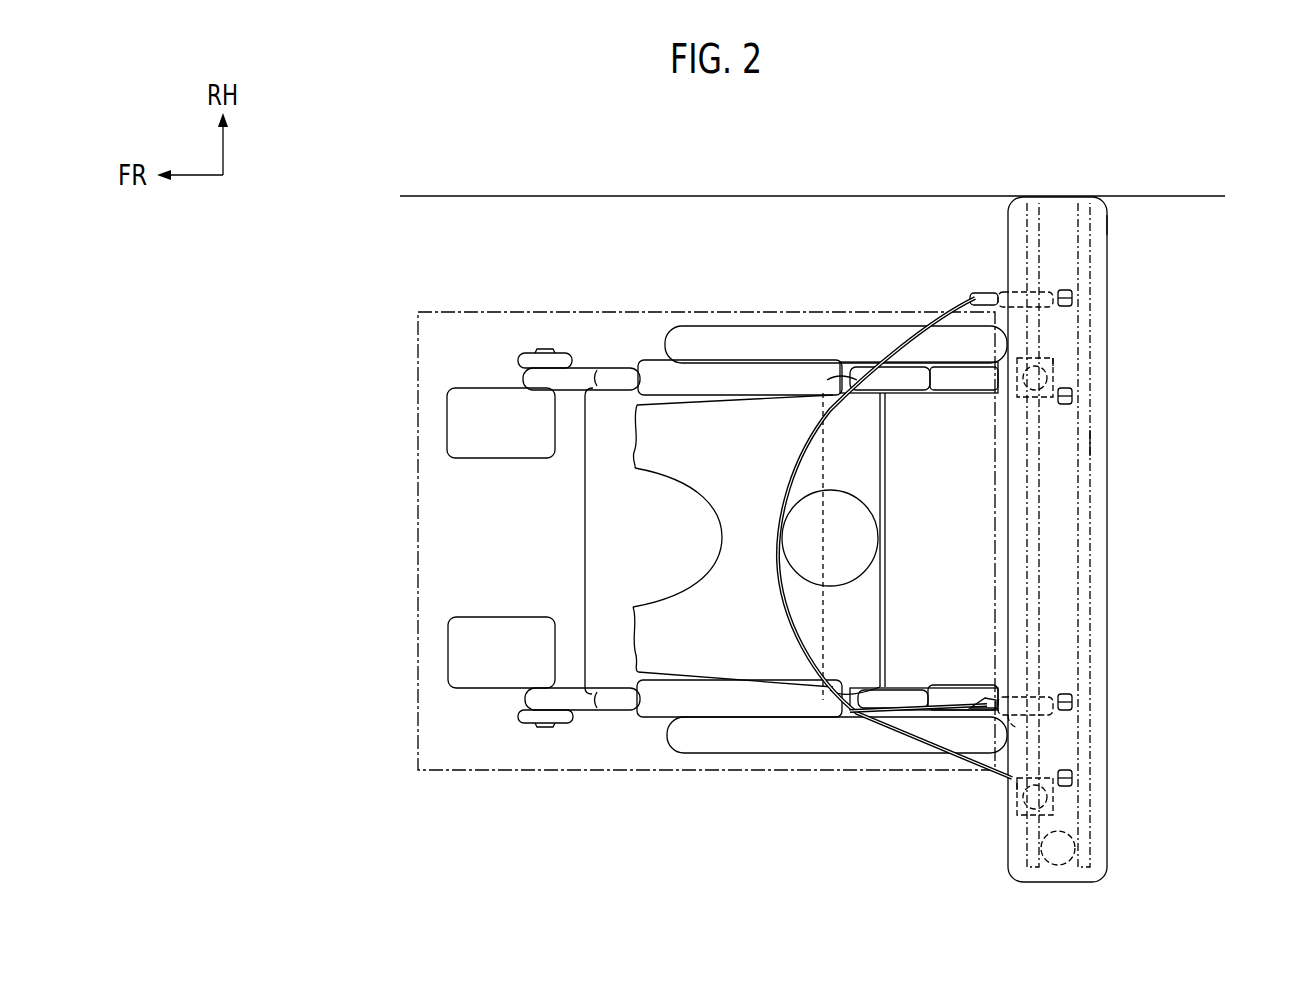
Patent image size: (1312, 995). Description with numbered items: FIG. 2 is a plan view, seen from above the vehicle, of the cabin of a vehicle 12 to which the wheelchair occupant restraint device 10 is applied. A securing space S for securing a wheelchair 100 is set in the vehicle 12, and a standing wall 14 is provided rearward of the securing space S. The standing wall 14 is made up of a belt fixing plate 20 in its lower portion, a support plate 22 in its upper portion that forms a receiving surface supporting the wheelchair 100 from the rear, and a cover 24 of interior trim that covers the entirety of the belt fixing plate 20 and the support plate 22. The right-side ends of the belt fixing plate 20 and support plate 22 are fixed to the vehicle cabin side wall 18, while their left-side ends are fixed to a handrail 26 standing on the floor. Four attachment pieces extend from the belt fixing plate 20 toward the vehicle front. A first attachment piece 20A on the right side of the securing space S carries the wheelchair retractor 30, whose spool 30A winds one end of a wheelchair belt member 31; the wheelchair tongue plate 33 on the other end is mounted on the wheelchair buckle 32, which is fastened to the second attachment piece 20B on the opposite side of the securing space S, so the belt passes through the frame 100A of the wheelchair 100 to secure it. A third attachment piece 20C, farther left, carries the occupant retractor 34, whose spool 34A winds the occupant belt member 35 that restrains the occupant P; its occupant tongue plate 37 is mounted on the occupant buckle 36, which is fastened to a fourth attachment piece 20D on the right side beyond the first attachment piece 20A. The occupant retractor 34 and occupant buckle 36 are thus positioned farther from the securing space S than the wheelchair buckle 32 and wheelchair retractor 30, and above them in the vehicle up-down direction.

The wheelchair occupant restraint device 10 is at (1214, 332).
The vehicle 12 is at (879, 216).
The standing wall 14 is at (1114, 527).
The vehicle cabin side wall 18 is at (553, 198).
The belt fixing plate 20 is at (1100, 443).
The first attachment piece 20A is at (1074, 395).
The second attachment piece 20B is at (1078, 695).
The third attachment piece 20C is at (1076, 765).
The fourth attachment piece 20D is at (1070, 288).
The support plate 22 is at (1040, 600).
The cover 24 is at (1107, 223).
The handrail 26 is at (1075, 832).
The wheelchair retractor 30 is at (1053, 370).
The spool 30A is at (1064, 360).
The wheelchair belt member 31 is at (903, 707).
The wheelchair buckle 32 is at (1028, 728).
The wheelchair tongue plate 33 is at (992, 690).
The occupant retractor 34 is at (1006, 814).
The spool 34A is at (1017, 787).
The occupant belt member 35 is at (898, 343).
The occupant buckle 36 is at (1000, 290).
The occupant tongue plate 37 is at (968, 290).
The wheelchair 100 is at (793, 320).
The frame 100A is at (903, 392).
The occupant P is at (880, 546).
The securing space S is at (627, 310).